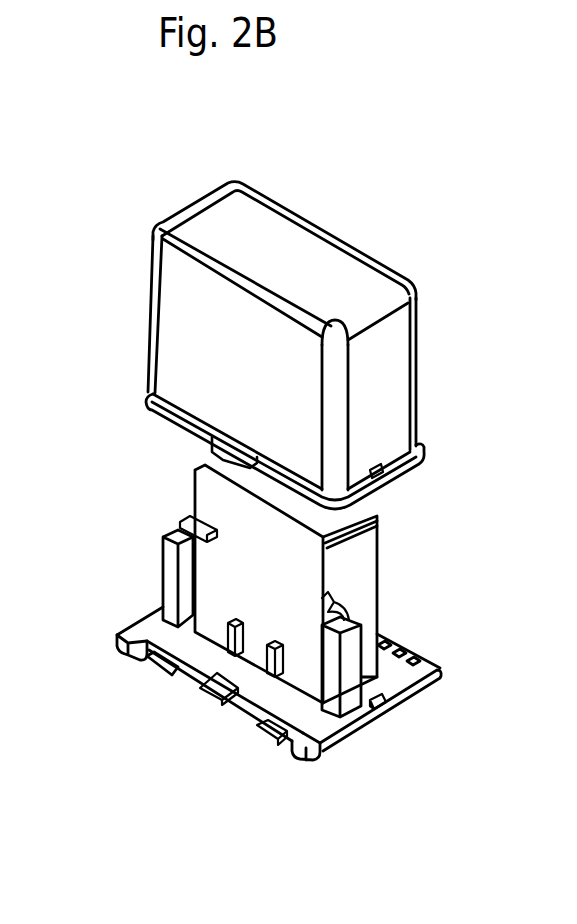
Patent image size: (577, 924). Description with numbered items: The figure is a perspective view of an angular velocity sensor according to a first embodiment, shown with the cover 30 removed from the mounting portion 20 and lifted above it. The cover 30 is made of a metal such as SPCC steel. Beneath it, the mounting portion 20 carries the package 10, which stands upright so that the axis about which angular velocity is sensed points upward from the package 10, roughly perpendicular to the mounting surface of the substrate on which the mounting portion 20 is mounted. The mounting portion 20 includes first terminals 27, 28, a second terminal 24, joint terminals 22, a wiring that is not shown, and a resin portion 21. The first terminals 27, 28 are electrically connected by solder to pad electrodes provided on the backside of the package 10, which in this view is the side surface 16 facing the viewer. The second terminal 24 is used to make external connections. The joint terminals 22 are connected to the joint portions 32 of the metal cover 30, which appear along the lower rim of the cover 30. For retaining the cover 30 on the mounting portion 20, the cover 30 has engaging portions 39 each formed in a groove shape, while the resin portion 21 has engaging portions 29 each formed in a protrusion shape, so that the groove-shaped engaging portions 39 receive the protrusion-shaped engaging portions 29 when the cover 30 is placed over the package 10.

The package 10 is at (365, 577).
The side surface 16 is at (215, 578).
The mounting portion 20 is at (82, 653).
The resin portion 21 is at (345, 737).
The joint terminal 22 is at (198, 698).
The second terminal 24 is at (263, 727).
The first terminal 27 is at (230, 643).
The first terminal 28 is at (193, 516).
The engaging portion 29 is at (393, 705).
The cover 30 is at (297, 247).
The joint portion 32 is at (240, 455).
The engaging portion 39 is at (383, 476).